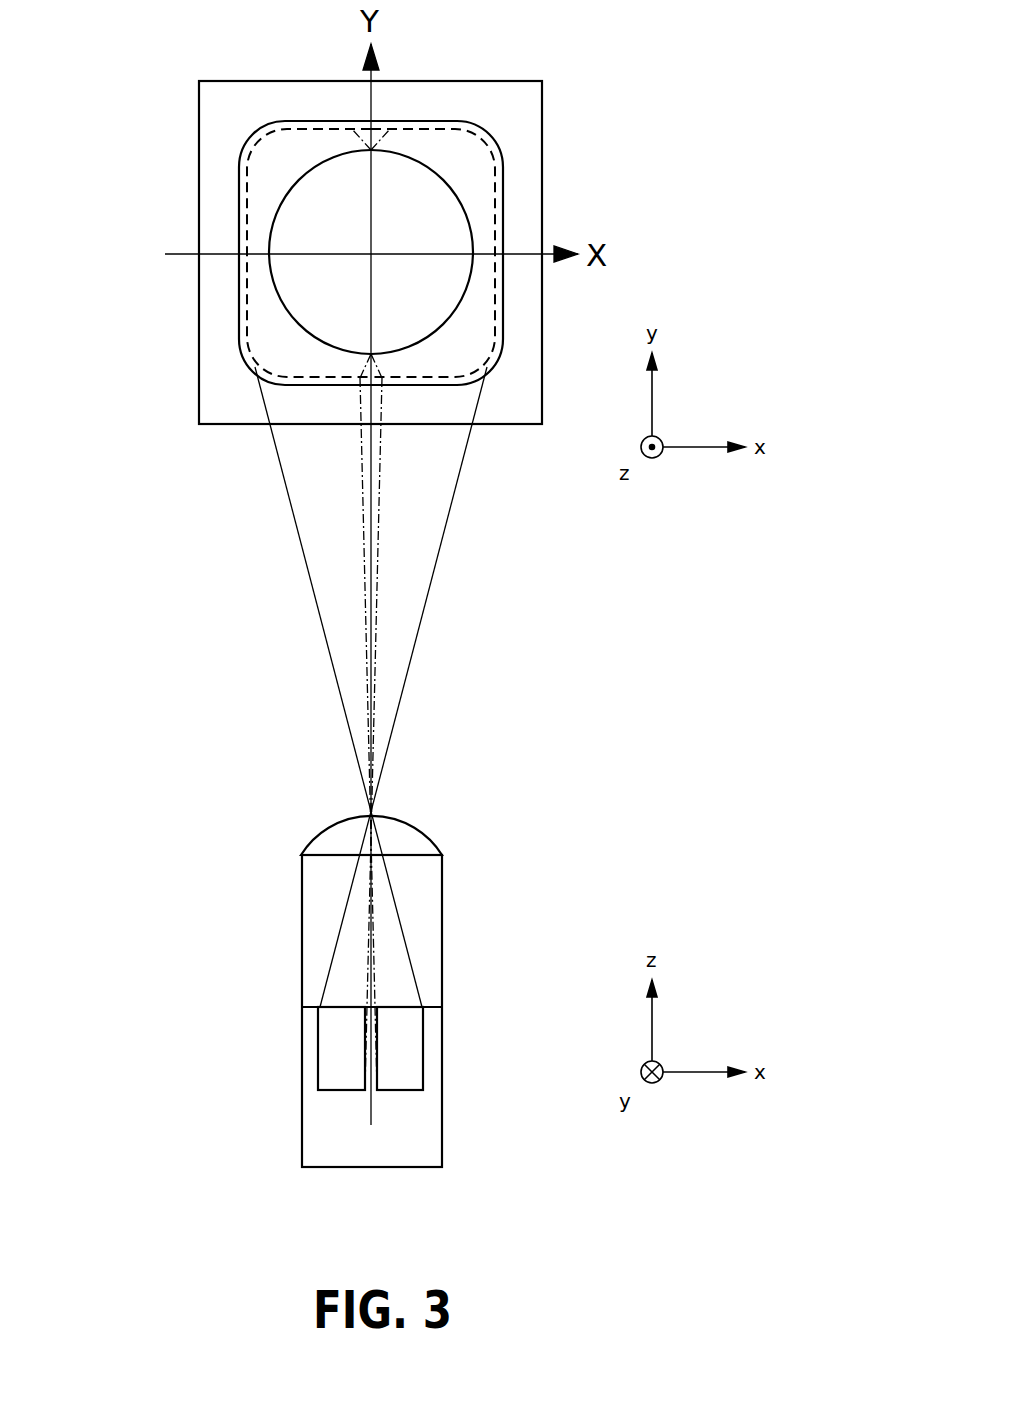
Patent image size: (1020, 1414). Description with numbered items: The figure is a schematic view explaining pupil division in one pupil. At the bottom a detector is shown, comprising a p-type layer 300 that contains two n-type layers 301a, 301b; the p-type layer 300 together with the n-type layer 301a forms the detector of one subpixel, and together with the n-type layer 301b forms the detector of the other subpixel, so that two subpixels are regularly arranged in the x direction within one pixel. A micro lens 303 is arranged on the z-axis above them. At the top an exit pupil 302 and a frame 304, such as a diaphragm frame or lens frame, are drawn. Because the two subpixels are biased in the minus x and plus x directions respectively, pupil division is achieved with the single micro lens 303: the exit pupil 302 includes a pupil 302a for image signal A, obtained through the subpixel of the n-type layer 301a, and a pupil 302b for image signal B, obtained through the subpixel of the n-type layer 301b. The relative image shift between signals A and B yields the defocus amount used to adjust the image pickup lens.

The p-type layer 300 is at (343, 1160).
The n-type layer 301a is at (318, 1070).
The n-type layer 301b is at (423, 1070).
The exit pupil 302 is at (503, 172).
The pupil for image signal A 302a is at (497, 215).
The pupil for image signal B 302b is at (243, 213).
The micro lens 303 is at (415, 828).
The frame 304 is at (427, 168).